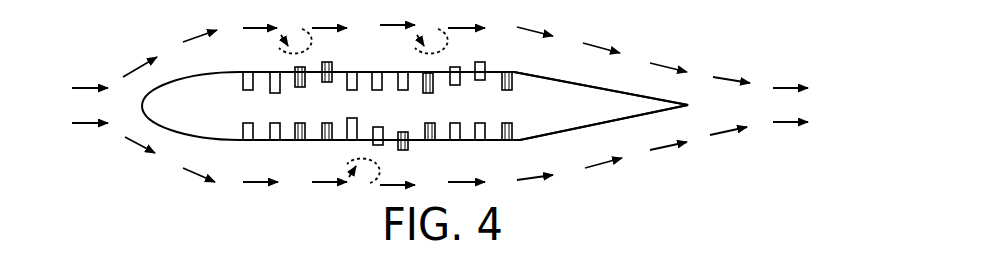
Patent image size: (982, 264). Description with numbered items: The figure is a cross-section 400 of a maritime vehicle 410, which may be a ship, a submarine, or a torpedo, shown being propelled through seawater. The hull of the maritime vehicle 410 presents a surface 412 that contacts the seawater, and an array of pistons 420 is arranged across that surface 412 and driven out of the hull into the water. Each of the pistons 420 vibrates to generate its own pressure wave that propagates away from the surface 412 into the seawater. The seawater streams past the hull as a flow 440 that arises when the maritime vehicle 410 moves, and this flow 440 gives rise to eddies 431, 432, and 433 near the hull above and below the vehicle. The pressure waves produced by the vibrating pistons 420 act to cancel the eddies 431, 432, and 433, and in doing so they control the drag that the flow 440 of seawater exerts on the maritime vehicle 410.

The cross-section 400 is at (73, 62).
The maritime vehicle 410 is at (218, 116).
The surface 412 is at (237, 71).
The pistons 420 is at (515, 102).
The eddy 431 is at (315, 45).
The eddy 432 is at (383, 166).
The eddy 433 is at (451, 45).
The flow 440 is at (134, 147).